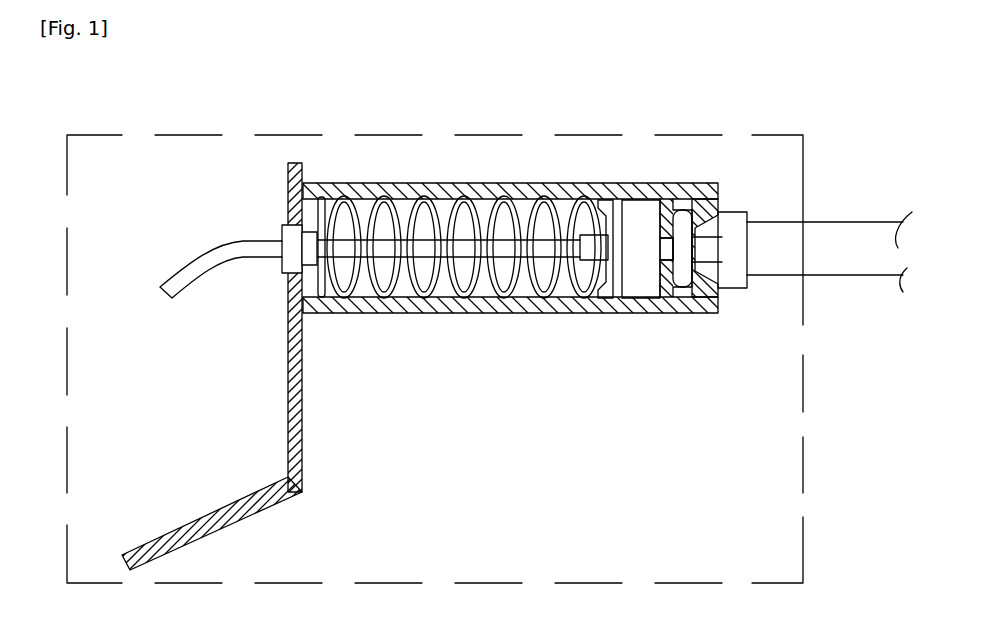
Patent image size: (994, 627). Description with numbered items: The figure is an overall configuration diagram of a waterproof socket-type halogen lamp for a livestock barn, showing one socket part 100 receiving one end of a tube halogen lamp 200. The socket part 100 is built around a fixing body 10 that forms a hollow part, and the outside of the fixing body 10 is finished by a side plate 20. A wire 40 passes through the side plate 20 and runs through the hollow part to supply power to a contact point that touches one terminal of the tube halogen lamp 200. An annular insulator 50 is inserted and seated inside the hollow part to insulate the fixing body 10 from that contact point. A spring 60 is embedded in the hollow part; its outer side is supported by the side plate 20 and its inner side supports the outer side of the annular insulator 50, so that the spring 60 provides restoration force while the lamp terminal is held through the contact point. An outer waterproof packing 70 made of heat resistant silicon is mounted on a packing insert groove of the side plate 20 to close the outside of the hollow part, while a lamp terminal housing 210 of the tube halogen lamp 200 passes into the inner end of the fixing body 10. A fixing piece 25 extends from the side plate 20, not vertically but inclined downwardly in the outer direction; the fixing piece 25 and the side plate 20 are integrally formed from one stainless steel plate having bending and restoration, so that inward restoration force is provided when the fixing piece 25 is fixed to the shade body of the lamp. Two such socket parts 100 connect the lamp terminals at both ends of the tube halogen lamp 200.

The fixing body 10 is at (390, 188).
The side plate 20 is at (290, 195).
The fixing piece 25 is at (260, 508).
The wire 40 is at (540, 247).
The annular insulator 50 is at (637, 222).
The spring 60 is at (487, 218).
The outer waterproof packing 70 is at (290, 254).
The socket part 100 is at (805, 180).
The tube halogen lamp 200 is at (822, 257).
The lamp terminal housing 210 is at (690, 248).